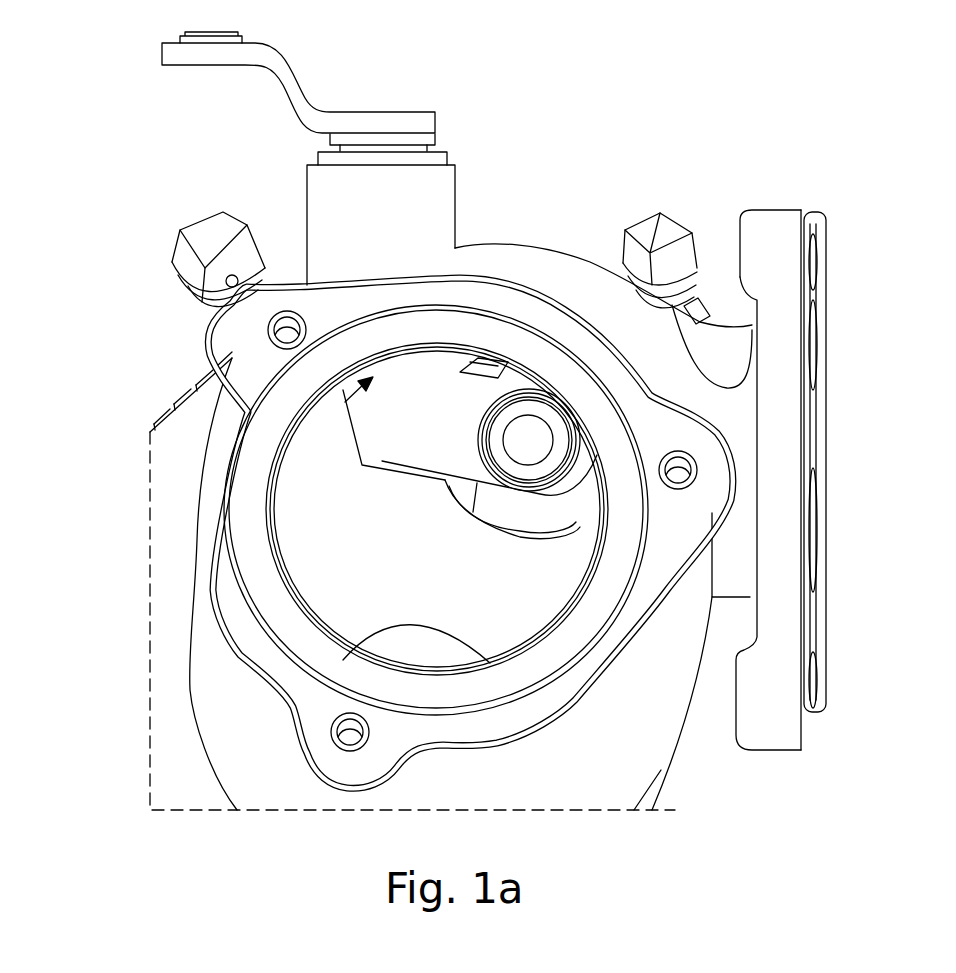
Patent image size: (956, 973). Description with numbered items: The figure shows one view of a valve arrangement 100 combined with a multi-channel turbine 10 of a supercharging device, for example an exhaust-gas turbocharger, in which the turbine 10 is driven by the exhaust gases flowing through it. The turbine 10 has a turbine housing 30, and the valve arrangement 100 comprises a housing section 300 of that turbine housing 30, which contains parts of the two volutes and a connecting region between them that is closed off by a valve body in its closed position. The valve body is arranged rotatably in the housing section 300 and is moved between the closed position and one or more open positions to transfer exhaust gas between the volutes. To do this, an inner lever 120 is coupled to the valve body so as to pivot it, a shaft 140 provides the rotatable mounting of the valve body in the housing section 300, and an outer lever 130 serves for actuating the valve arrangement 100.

The multi-channel turbine 10 is at (118, 291).
The turbine housing 30 is at (235, 730).
The valve arrangement 100 is at (538, 224).
The inner lever 120 is at (432, 455).
The outer lever 130 is at (291, 73).
The shaft 140 is at (345, 402).
The housing section 300 is at (655, 352).